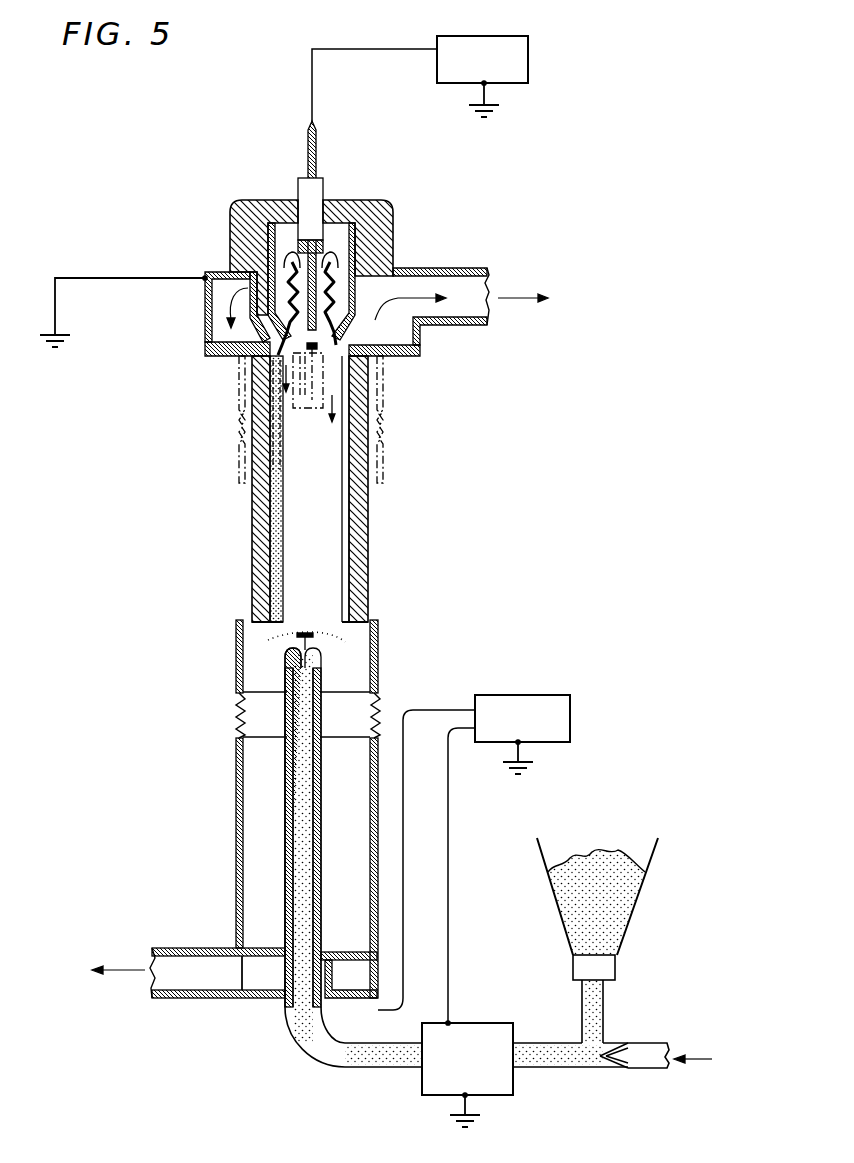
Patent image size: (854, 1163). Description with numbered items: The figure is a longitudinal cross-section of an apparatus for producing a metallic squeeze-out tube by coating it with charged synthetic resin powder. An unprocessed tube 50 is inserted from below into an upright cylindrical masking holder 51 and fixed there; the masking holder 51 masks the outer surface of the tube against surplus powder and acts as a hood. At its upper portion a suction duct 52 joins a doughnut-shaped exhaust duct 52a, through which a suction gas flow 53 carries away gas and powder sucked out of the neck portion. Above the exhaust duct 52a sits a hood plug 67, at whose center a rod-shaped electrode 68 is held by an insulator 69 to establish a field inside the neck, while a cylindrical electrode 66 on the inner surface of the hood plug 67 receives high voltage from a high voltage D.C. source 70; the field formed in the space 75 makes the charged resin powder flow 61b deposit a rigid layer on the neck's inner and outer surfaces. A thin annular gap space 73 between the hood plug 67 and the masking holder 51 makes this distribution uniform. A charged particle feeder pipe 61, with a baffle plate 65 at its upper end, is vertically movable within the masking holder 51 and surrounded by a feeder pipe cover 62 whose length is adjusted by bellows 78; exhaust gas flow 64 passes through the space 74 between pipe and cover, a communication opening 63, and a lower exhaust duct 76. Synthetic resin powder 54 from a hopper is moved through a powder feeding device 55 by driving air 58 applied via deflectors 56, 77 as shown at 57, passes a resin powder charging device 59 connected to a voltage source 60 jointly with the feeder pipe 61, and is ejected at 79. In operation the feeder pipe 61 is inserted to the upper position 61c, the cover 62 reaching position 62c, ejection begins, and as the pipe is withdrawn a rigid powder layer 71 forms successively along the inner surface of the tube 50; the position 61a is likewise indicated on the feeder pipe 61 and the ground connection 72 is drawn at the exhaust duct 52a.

The unprocessed tube 50 is at (350, 562).
The masking holder 51 is at (362, 508).
The suction duct 52 is at (487, 270).
The exhaust duct 52a is at (225, 283).
The suction gas flow 53 is at (543, 297).
The synthetic resin powder 54 is at (605, 855).
The powder feeding device 55 is at (613, 965).
The deflector 56 is at (658, 1042).
The powder transport path 57 is at (588, 1058).
The driving air 58 is at (700, 1058).
The resin powder charging device 59 is at (446, 1095).
The voltage source 60 is at (527, 695).
The charged particle feeder pipe 61 is at (287, 793).
The electrode tip region 61a is at (292, 372).
The charged resin powder flow 61b is at (328, 243).
The upper position of feeder pipe 61c is at (296, 398).
The feeder pipe cover 62 is at (237, 858).
The position of feeder pipe cover 62c is at (385, 462).
The communication opening 63 is at (261, 950).
The exhaust gas flow 64 is at (110, 972).
The baffle plate 65 is at (240, 632).
The cylindrical electrode 66 is at (397, 285).
The hood plug 67 is at (372, 205).
The rod-shaped electrode 68 is at (270, 238).
The insulator 69 is at (304, 178).
The high voltage D.C. source 70 is at (528, 50).
The rigid powder layer 71 is at (279, 546).
The ground wire 72 is at (73, 277).
The annular gap space 73 is at (397, 354).
The space 74 is at (275, 420).
The space 75 is at (253, 300).
The lower exhaust duct 76 is at (357, 972).
The deflector 77 is at (614, 1045).
The bellows 78 is at (378, 712).
The ejected charged powder 79 is at (340, 636).